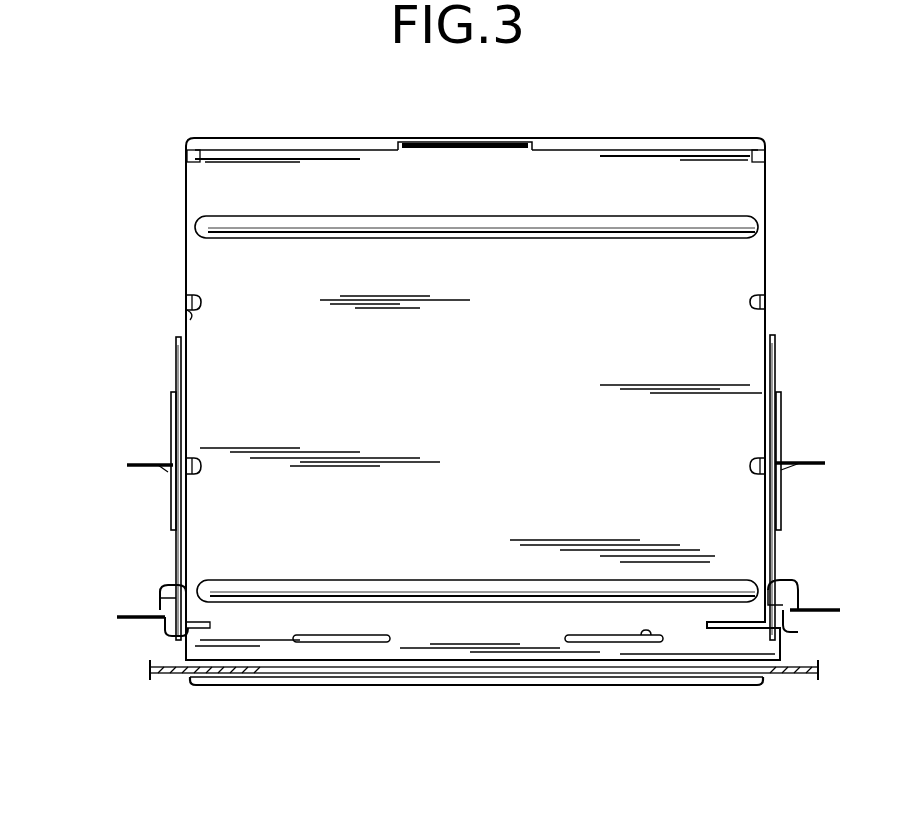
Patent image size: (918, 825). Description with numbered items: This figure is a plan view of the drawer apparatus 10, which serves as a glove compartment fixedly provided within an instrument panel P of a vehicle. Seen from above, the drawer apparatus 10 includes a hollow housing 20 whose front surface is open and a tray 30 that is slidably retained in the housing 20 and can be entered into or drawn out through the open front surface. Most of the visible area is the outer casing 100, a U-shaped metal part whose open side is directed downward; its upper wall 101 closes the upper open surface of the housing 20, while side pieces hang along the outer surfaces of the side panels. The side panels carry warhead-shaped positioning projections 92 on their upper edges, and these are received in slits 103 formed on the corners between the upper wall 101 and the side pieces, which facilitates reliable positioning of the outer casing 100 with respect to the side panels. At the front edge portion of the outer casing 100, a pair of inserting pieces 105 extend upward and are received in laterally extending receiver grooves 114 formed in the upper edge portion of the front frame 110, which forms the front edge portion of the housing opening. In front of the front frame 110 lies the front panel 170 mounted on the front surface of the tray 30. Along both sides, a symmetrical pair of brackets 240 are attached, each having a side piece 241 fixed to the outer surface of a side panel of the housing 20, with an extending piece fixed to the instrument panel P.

The drawer apparatus 10 is at (275, 128).
The upper wall 101 is at (472, 155).
The hollow housing 20 is at (195, 247).
The outer casing 100 is at (748, 255).
The positioning projections 92 is at (190, 301).
The slits 103 is at (192, 318).
The brackets 240 is at (95, 458).
The side piece 241 is at (172, 437).
The front frame 110 is at (418, 640).
The inserting pieces 105 is at (597, 640).
The receiver grooves 114 is at (650, 636).
The front panel 170 is at (506, 683).
The instrument panel P is at (170, 676).
The tray 30 is at (250, 684).